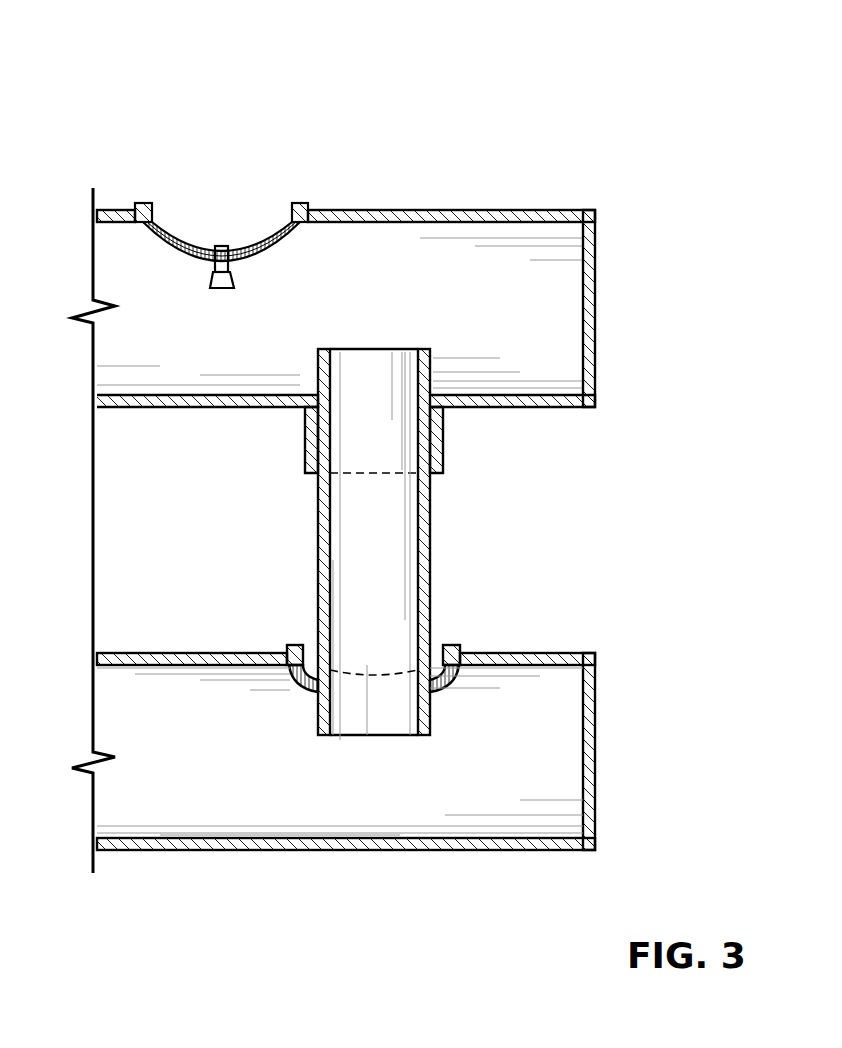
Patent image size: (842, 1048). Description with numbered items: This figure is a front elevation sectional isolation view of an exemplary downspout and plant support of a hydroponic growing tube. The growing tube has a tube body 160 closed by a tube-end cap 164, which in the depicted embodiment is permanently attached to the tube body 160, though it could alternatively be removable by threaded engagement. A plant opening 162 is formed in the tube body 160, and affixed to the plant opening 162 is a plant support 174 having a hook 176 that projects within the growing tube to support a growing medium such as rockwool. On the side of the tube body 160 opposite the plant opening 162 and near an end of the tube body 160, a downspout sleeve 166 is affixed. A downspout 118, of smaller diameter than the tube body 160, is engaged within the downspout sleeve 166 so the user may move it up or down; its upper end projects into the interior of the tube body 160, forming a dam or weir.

The downspout 118 is at (318, 565).
The tube body 160 is at (442, 210).
The plant opening 162 is at (177, 148).
The tube-end cap 164 is at (596, 288).
The downspout sleeve 166 is at (305, 450).
The plant support 174 is at (178, 220).
The hook 176 is at (224, 280).